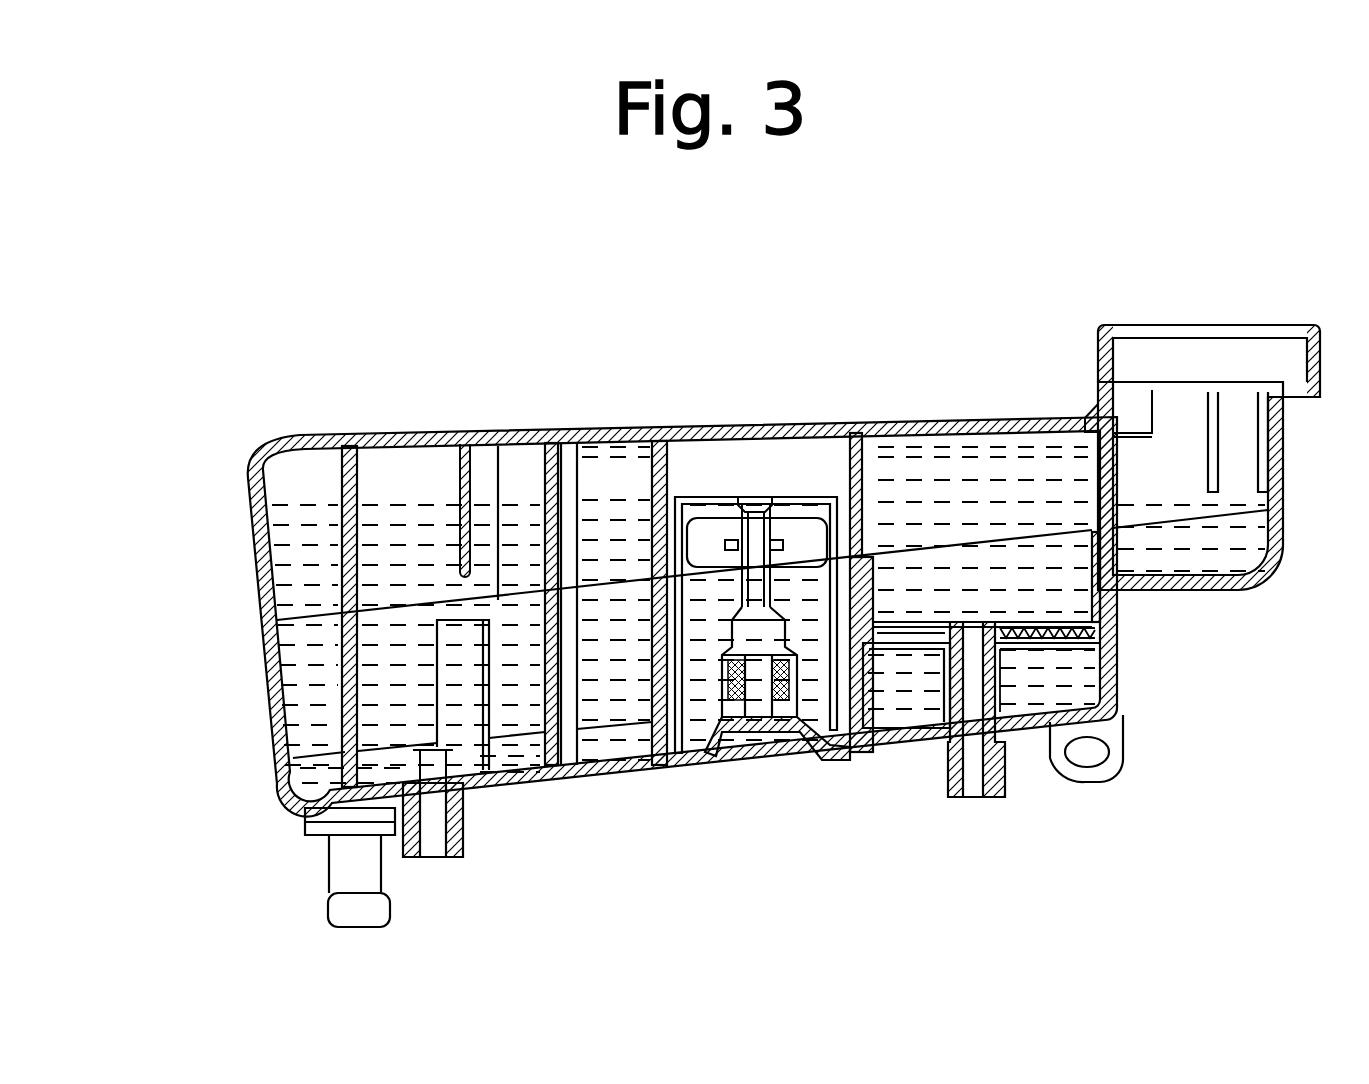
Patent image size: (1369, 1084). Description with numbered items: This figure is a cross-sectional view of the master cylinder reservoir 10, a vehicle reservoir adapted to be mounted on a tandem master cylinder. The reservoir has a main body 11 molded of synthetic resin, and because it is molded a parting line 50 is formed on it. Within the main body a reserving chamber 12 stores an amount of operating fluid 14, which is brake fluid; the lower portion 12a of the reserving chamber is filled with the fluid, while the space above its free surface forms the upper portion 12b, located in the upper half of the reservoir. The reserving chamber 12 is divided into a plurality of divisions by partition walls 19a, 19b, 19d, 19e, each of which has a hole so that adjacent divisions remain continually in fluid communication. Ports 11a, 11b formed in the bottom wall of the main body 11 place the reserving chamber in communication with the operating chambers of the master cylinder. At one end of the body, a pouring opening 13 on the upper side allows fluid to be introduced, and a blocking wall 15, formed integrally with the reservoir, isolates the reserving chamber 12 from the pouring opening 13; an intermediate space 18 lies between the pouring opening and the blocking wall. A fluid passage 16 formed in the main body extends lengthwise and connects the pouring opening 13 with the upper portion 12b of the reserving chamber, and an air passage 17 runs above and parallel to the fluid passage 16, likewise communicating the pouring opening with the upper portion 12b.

The master cylinder reservoir 10 is at (859, 404).
The main body 11 is at (1118, 668).
The port 11a is at (470, 840).
The port 11b is at (1005, 795).
The reserving chamber 12 is at (605, 496).
The lower portion of the reserving chamber 12a is at (622, 688).
The upper portion of the reserving chamber 12b is at (411, 483).
The pouring opening 13 is at (1212, 340).
The operating fluid 14 is at (915, 665).
The blocking wall 15 is at (1113, 483).
The fluid passage 16 is at (975, 460).
The air passage 17 is at (727, 432).
The intermediate space 18 is at (1180, 508).
The partition wall 19a is at (340, 718).
The partition wall 19b is at (548, 735).
The partition wall 19d is at (645, 738).
The partition wall 19e is at (843, 700).
The parting line 50 is at (300, 620).